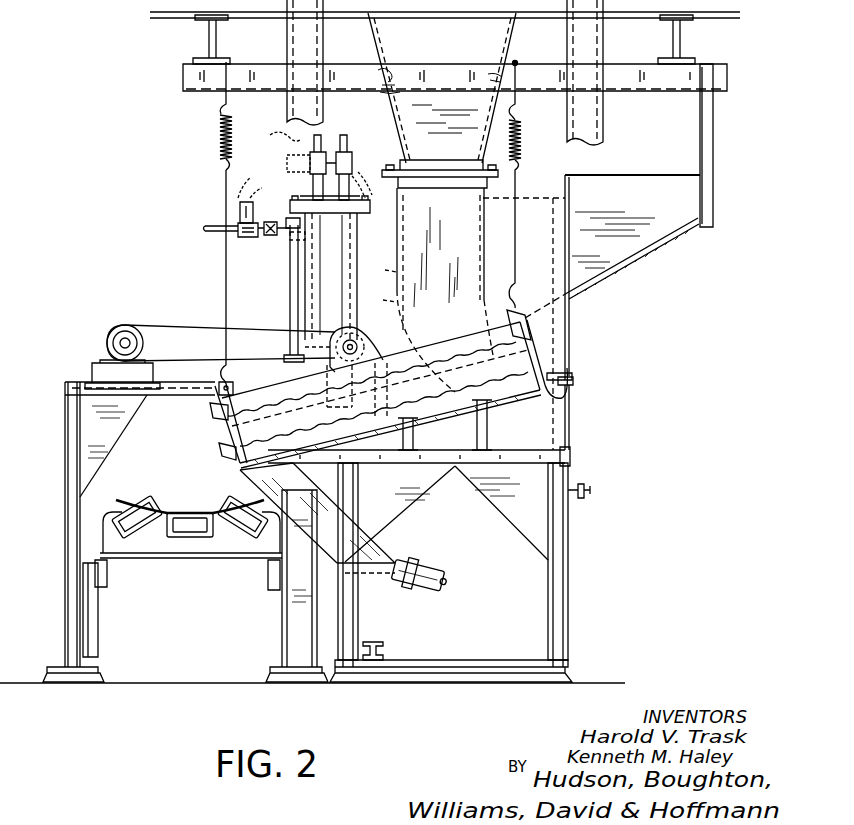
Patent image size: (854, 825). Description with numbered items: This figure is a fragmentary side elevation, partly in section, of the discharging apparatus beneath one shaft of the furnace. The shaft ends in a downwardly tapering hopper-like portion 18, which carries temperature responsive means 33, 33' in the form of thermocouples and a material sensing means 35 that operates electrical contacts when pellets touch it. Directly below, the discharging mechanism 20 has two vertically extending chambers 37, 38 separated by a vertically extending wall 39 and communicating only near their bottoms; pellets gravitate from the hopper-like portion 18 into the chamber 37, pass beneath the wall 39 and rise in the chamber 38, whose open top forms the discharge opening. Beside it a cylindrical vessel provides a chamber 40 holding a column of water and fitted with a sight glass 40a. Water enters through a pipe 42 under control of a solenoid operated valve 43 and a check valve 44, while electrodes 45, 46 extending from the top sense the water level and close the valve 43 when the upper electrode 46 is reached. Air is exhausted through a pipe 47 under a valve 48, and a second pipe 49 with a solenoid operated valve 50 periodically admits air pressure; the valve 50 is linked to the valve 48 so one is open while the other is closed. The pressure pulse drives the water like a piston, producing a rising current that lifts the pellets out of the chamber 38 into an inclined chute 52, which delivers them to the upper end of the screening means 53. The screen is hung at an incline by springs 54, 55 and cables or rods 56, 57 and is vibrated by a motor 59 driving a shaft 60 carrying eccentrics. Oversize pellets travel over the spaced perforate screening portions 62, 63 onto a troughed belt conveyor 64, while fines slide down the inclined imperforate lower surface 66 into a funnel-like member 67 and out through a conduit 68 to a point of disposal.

The hopper-like portion 18 is at (372, 42).
The discharging mechanism 20 is at (578, 332).
The temperature responsive means 33 is at (366, 67).
The temperature responsive means 33' is at (488, 61).
The material sensing means 35 is at (402, 120).
The chamber 37 is at (397, 292).
The chamber 38 is at (575, 296).
The wall 39 is at (480, 242).
The chamber 40 is at (357, 240).
The sight glass 40a is at (290, 296).
The pipe 42 is at (205, 229).
The solenoid operated valve 43 is at (254, 208).
The check valve 44 is at (262, 238).
The electrode 45 is at (342, 300).
The electrode 46 is at (306, 240).
The pipe 47 is at (352, 134).
The valve 48 is at (356, 175).
The pipe 49 is at (314, 140).
The solenoid operated valve 50 is at (287, 164).
The inclined chute 52 is at (668, 185).
The screening means 53 is at (458, 348).
The spring 54 is at (521, 150).
The spring 55 is at (219, 145).
The cable or rod 56 is at (538, 250).
The cable or rod 57 is at (222, 278).
The motor 59 is at (132, 318).
The shaft 60 is at (362, 340).
The perforate screening portion 62 is at (210, 410).
The perforate screening portion 63 is at (220, 450).
The conveyor 64 is at (158, 503).
The imperforate lower surface 66 is at (562, 385).
The funnel-like member 67 is at (384, 505).
The conduit 68 is at (430, 588).